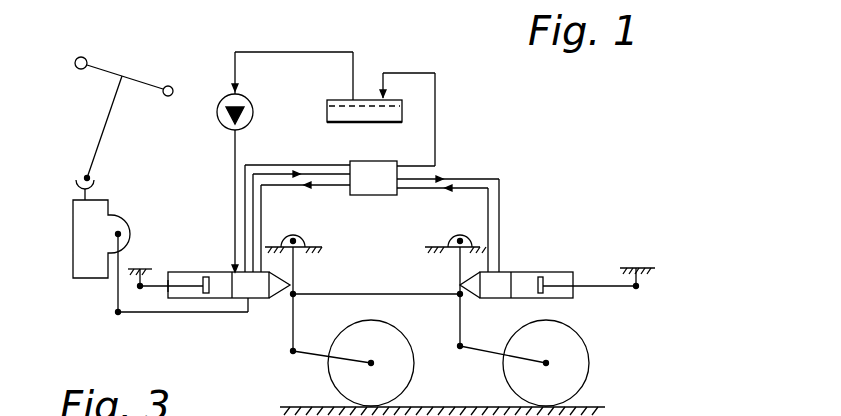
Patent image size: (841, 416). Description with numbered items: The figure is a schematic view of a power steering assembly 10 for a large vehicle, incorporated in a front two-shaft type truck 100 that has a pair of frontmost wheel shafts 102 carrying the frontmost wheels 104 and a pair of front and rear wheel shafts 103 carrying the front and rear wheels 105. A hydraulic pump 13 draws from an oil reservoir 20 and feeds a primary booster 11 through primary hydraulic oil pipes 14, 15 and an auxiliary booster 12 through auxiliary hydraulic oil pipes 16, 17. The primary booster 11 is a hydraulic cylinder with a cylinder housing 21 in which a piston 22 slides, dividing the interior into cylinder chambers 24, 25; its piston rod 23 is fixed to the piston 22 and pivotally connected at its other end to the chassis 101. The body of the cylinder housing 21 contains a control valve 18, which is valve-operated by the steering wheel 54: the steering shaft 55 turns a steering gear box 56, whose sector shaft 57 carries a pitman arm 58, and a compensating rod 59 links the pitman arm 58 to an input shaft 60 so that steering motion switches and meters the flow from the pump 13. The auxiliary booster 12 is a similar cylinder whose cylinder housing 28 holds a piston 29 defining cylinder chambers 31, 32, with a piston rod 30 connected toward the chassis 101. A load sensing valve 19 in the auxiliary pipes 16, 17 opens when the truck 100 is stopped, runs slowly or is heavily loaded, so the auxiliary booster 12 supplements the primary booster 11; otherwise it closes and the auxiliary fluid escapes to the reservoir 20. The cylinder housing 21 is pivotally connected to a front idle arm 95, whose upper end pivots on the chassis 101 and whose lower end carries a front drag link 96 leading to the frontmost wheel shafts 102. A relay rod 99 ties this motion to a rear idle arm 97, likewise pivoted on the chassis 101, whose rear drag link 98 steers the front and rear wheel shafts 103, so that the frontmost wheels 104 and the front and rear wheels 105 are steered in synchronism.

The power steering assembly 10 is at (379, 34).
The primary booster 11 is at (192, 268).
The auxiliary booster 12 is at (545, 265).
The hydraulic pump 13 is at (219, 98).
The primary hydraulic oil pipe 14 is at (235, 172).
The primary hydraulic oil pipe 15 is at (283, 163).
The auxiliary hydraulic oil pipe 16 is at (333, 173).
The auxiliary hydraulic oil pipe 17 is at (322, 186).
The control valve 18 is at (259, 303).
The load sensing valve 19 is at (382, 191).
The oil reservoir 20 is at (405, 118).
The cylinder housing 21 is at (183, 300).
The piston 22 is at (213, 293).
The piston rod 23 is at (155, 290).
The cylinder chamber 24 is at (223, 278).
The cylinder chamber 25 is at (170, 277).
The cylinder housing 28 is at (532, 272).
The piston 29 is at (550, 290).
The piston rod 30 is at (618, 292).
The cylinder chamber 31 is at (568, 273).
The cylinder chamber 32 is at (522, 282).
The steering wheel 54 is at (106, 64).
The steering shaft 55 is at (100, 136).
The steering gear box 56 is at (85, 268).
The sector shaft 57 is at (122, 226).
The pitman arm 58 is at (115, 292).
The compensating rod 59 is at (224, 313).
The input shaft 60 is at (248, 288).
The front idle arm 95 is at (295, 330).
The front drag link 96 is at (315, 354).
The rear idle arm 97 is at (463, 334).
The rear drag link 98 is at (490, 350).
The relay rod 99 is at (423, 297).
The front two-shaft type truck 100 is at (620, 243).
The chassis 101 is at (143, 262).
The frontmost wheel shafts 102 is at (371, 363).
The front and rear wheel shafts 103 is at (546, 363).
The frontmost wheels 104 is at (408, 380).
The front and rear wheels 105 is at (590, 350).